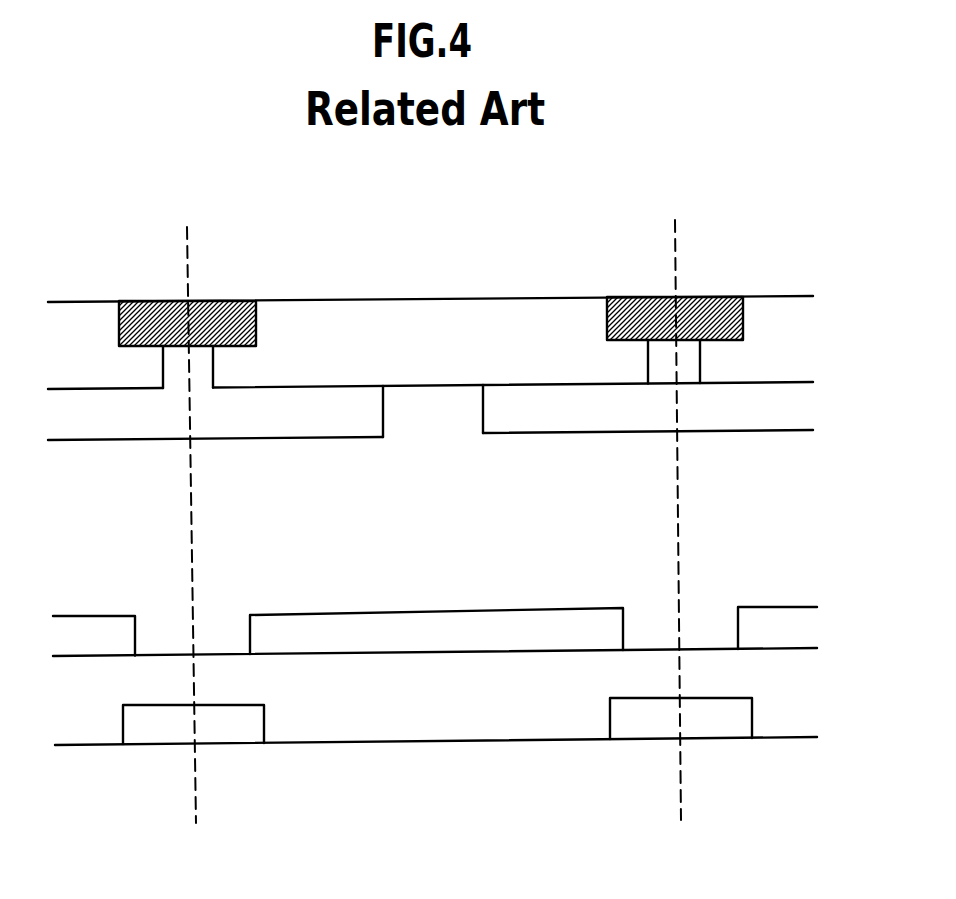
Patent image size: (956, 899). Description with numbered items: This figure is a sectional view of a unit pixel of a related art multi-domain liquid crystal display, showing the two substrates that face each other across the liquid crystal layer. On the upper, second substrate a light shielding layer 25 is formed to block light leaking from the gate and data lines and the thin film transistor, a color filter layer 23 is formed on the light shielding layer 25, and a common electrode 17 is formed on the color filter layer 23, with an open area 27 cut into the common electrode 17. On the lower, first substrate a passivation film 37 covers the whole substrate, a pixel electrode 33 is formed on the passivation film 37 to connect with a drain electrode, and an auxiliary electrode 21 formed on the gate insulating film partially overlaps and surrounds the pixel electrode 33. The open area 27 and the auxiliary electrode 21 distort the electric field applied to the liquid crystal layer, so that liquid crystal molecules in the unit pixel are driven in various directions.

The common electrode 17 is at (746, 413).
The auxiliary electrode 21 is at (642, 725).
The color filter layer 23 is at (437, 302).
The light shielding layer 25 is at (232, 301).
The open area 27 is at (436, 418).
The pixel electrode 33 is at (540, 626).
The passivation film 37 is at (333, 685).